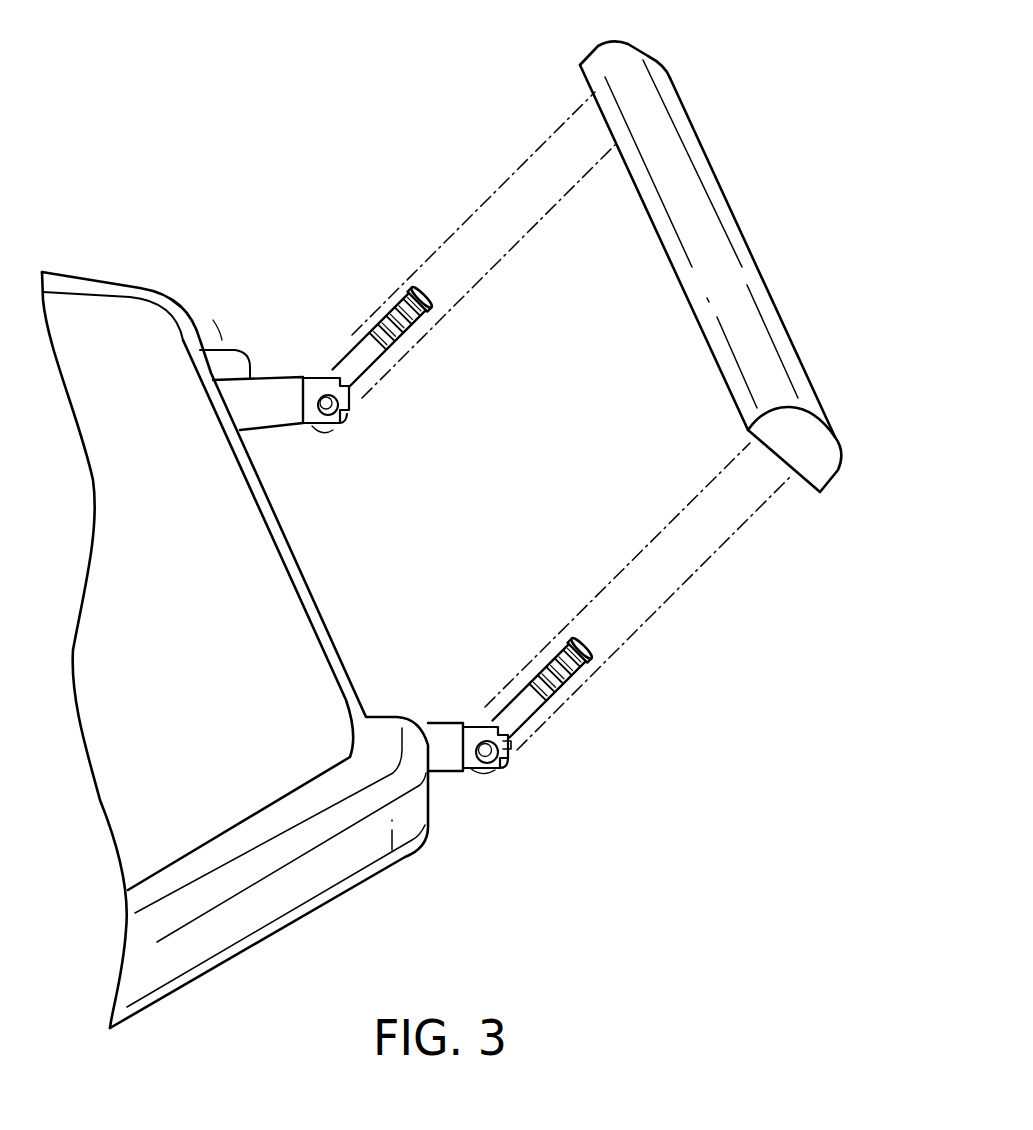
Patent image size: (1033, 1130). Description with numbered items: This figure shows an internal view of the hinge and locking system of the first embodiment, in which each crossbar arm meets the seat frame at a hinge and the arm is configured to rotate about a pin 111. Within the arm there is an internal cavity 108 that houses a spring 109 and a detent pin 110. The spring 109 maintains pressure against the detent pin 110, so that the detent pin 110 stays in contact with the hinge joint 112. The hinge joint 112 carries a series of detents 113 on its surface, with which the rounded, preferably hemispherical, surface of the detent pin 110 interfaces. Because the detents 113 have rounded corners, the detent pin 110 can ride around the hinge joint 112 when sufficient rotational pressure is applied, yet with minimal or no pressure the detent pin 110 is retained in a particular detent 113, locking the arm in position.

The internal cavity 108 is at (598, 668).
The spring 109 is at (576, 681).
The detent pin 110 is at (541, 719).
The pins 111 is at (500, 768).
The hinge joint 112 is at (475, 782).
The detents 113 is at (527, 755).